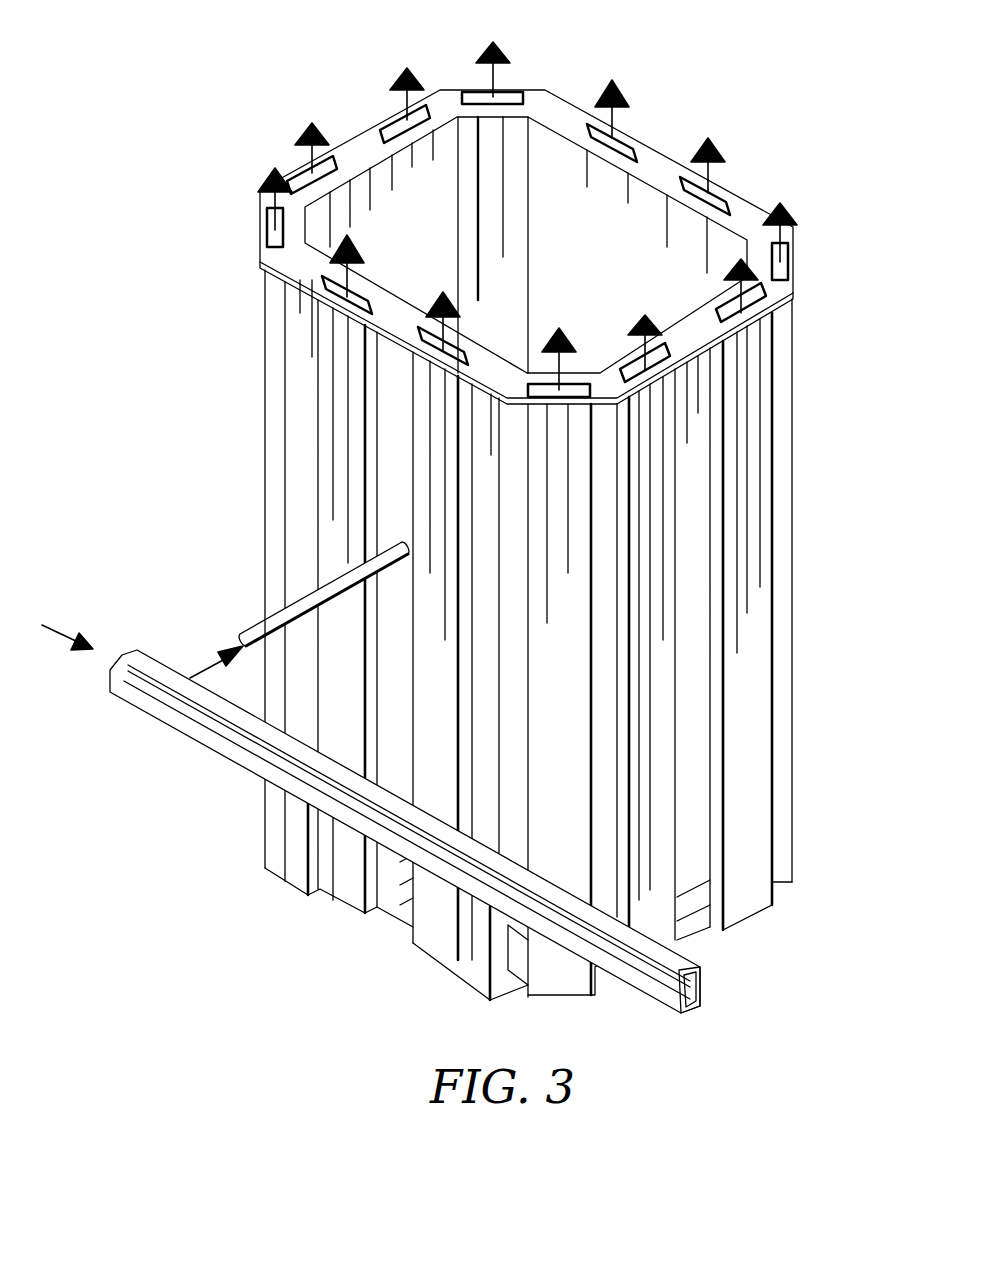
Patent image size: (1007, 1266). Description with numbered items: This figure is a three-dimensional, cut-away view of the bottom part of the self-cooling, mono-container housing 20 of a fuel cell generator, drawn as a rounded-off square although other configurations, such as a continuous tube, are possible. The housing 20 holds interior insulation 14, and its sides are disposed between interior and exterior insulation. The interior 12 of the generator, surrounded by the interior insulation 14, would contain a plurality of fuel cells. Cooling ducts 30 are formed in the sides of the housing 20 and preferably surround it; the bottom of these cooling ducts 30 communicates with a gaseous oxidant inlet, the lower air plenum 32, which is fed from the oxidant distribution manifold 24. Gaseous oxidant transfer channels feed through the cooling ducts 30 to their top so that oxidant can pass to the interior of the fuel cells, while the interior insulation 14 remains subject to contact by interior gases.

The interior 12 is at (575, 245).
The interior insulation 14 is at (655, 182).
The housing 20 is at (357, 147).
The oxidant distribution manifold 24 is at (170, 714).
The cooling ducts 30 is at (470, 93).
The lower air plenum 32 is at (272, 822).